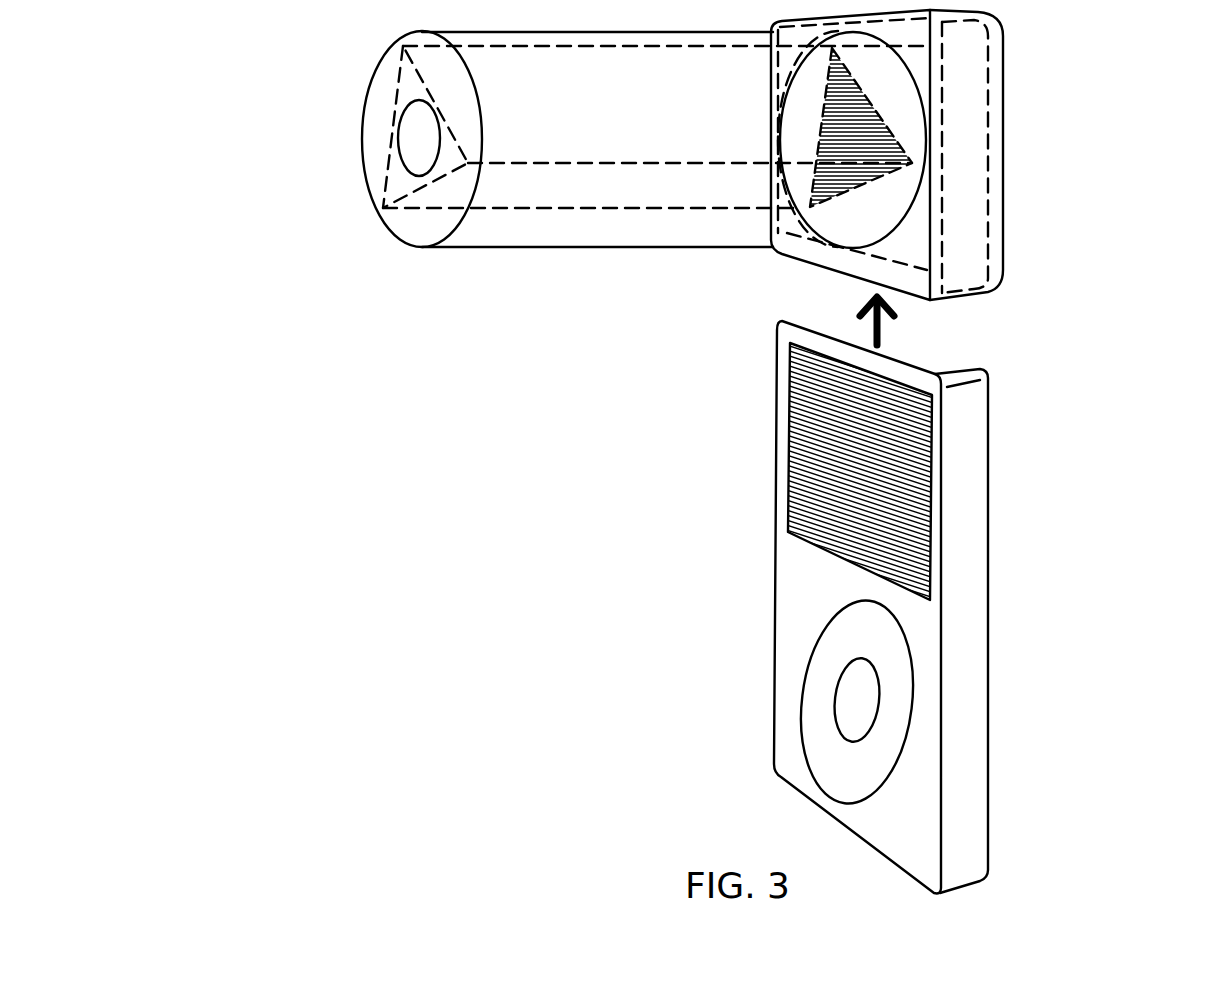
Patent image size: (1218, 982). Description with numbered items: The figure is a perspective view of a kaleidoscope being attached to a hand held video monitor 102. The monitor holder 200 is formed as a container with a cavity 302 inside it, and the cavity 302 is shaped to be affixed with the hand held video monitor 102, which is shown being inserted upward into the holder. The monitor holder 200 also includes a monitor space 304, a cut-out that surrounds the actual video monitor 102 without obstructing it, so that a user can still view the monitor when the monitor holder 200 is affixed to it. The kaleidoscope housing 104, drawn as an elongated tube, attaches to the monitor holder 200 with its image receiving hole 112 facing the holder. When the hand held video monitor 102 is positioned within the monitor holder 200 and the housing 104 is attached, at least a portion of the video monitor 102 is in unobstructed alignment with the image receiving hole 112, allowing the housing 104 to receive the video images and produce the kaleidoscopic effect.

The hand held video monitor 102 is at (818, 460).
The housing 104 is at (597, 245).
The image receiving hole 112 is at (850, 190).
The monitor holder 200 is at (1005, 142).
The cavity 302 is at (985, 88).
The monitor space 304 is at (910, 270).